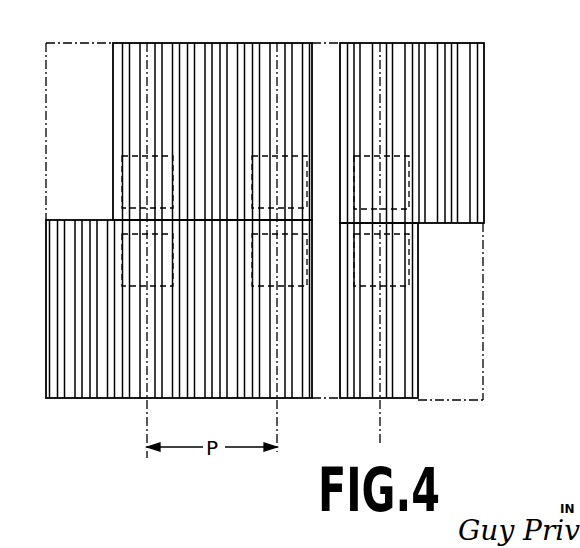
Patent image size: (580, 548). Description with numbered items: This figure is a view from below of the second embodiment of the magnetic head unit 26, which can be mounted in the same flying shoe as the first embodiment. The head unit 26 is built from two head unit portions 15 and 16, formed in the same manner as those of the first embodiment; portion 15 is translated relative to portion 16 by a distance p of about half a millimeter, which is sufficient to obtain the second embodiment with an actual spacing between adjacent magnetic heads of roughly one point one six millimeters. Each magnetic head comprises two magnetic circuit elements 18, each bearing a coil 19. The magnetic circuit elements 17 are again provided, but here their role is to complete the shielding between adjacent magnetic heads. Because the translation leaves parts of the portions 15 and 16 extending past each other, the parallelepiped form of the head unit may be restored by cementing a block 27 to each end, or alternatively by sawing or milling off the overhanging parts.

The head unit portion 15 is at (418, 363).
The head unit portion 16 is at (485, 125).
The magnetic circuit element 17 is at (219, 42).
The magnetic circuit element 18 is at (147, 45).
The coil 19 is at (122, 180).
The head unit 26 is at (536, 232).
The block 27 is at (46, 135).